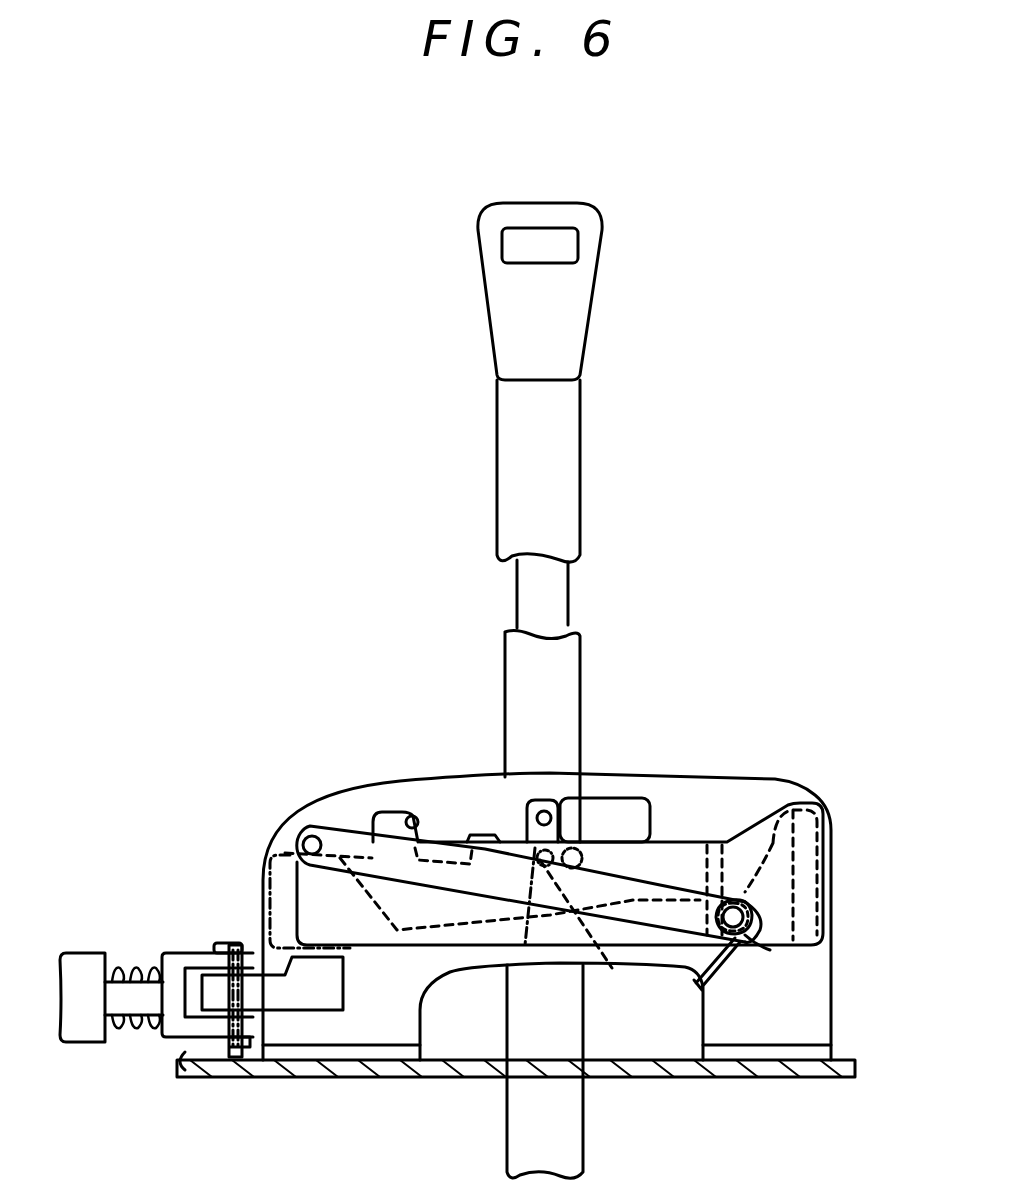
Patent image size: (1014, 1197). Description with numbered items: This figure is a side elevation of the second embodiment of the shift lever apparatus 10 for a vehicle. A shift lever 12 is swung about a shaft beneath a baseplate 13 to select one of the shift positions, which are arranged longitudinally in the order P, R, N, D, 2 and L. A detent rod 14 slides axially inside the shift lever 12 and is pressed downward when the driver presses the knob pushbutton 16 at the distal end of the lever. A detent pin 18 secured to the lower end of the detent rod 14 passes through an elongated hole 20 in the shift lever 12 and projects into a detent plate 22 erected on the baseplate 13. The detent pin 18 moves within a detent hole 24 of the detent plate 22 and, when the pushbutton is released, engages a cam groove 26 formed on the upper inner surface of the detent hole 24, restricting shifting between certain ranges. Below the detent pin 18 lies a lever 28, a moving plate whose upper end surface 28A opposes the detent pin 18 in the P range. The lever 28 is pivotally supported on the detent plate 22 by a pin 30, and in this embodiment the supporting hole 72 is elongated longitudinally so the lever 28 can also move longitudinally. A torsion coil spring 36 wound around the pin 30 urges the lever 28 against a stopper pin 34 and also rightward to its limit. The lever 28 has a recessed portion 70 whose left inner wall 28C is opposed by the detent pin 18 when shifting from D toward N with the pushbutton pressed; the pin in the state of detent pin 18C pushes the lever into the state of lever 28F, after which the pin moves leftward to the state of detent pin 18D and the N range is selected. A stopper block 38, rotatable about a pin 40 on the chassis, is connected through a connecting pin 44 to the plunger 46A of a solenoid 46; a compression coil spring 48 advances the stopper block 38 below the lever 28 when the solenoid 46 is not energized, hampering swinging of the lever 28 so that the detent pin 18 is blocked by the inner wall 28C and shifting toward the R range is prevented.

The shift lever apparatus 10 is at (762, 653).
The shift lever 12 is at (578, 451).
The baseplate 13 is at (662, 1078).
The detent rod 14 is at (555, 612).
The knob pushbutton 16 is at (540, 243).
The detent pin 18 is at (555, 824).
The detent pin (two-dotted chain line state) 18C is at (608, 760).
The detent pin (leftward-moved state) 18D is at (525, 945).
The elongated hole 20 is at (555, 838).
The detent plate 22 is at (828, 1023).
The detent hole 24 is at (617, 972).
The cam groove 26 is at (418, 818).
The lever 28 is at (377, 927).
The upper end surface 28A is at (360, 855).
The inner wall 28C is at (625, 800).
The lever (two-dotted chain line state) 28F is at (795, 785).
The pin 30 is at (745, 937).
The stopper pin 34 is at (308, 836).
The torsion coil spring 36 is at (724, 960).
The stopper block 38 is at (310, 1000).
The pin 40 is at (226, 943).
The connecting pin 44 is at (242, 945).
The solenoid 46 is at (82, 1025).
The plunger 46A is at (175, 1025).
The compression coil spring 48 is at (128, 1022).
The recessed portion 70 is at (700, 840).
The hole 72 is at (770, 916).
The shift position 2 is at (645, 812).